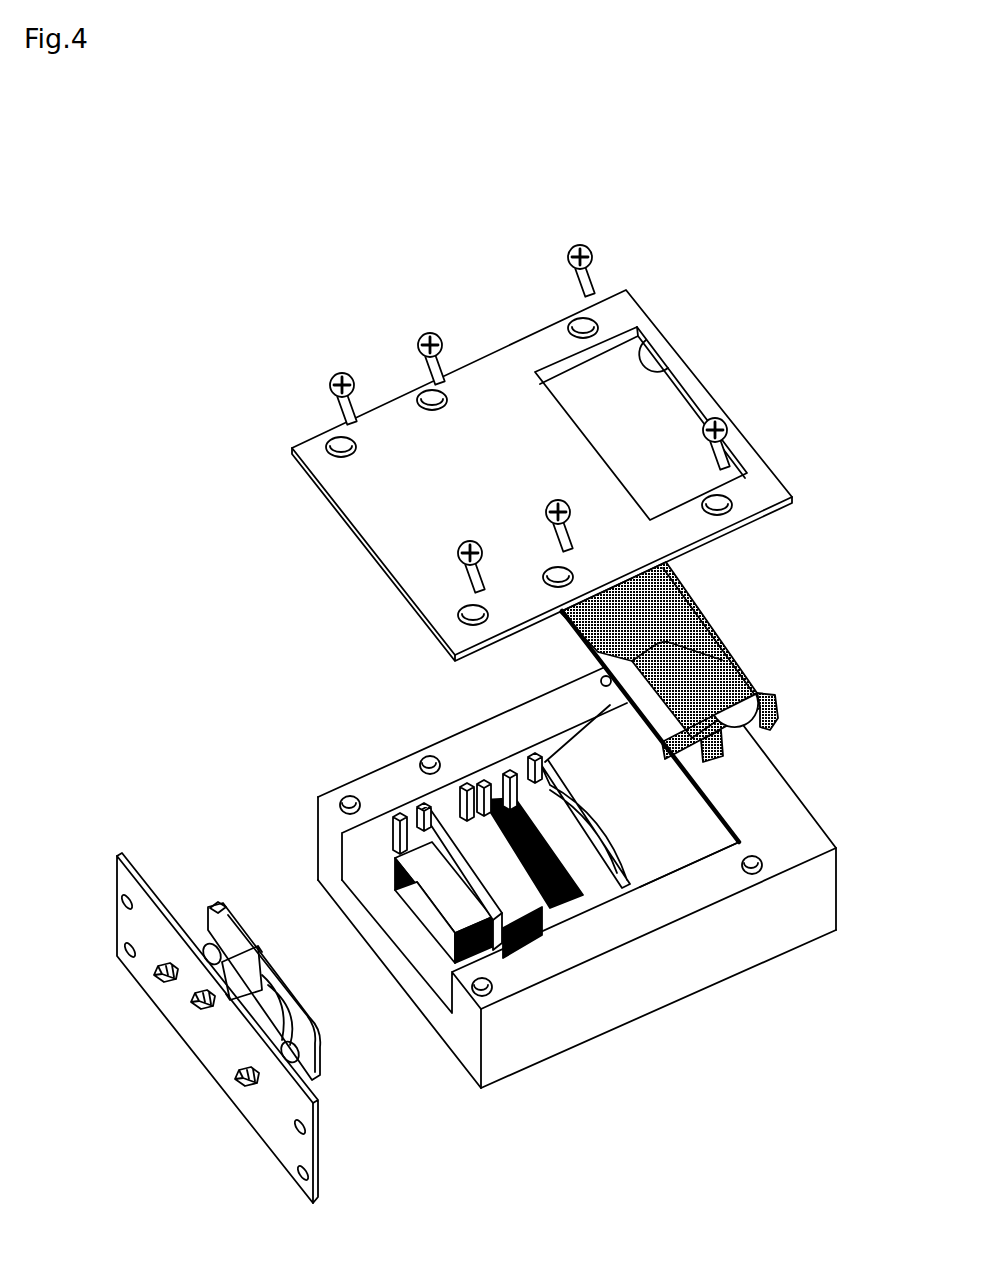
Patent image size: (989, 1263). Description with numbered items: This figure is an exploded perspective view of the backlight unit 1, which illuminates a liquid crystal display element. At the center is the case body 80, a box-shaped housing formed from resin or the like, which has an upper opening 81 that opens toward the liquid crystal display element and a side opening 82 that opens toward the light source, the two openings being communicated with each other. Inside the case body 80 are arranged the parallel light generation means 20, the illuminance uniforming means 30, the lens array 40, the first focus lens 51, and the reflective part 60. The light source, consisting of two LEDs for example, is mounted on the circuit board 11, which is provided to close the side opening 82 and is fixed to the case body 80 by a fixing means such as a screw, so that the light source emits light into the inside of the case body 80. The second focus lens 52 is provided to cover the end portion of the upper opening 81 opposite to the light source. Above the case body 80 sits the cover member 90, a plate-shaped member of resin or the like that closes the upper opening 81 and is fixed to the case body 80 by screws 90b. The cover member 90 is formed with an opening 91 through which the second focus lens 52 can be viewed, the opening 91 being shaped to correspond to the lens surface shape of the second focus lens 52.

The backlight unit 1 is at (235, 352).
The circuit board 11 is at (280, 1122).
The parallel light generation means 20 is at (210, 910).
The illuminance uniforming means 30 is at (448, 902).
The lens array 40 is at (595, 895).
The first focus lens 51 is at (616, 940).
The second focus lens 52 is at (725, 660).
The reflective part 60 is at (667, 842).
The case body 80 is at (517, 849).
The upper opening 81 is at (340, 833).
The side opening 82 is at (347, 880).
The cover member 90 is at (575, 468).
The screw 90b is at (577, 281).
The opening 91 is at (650, 343).